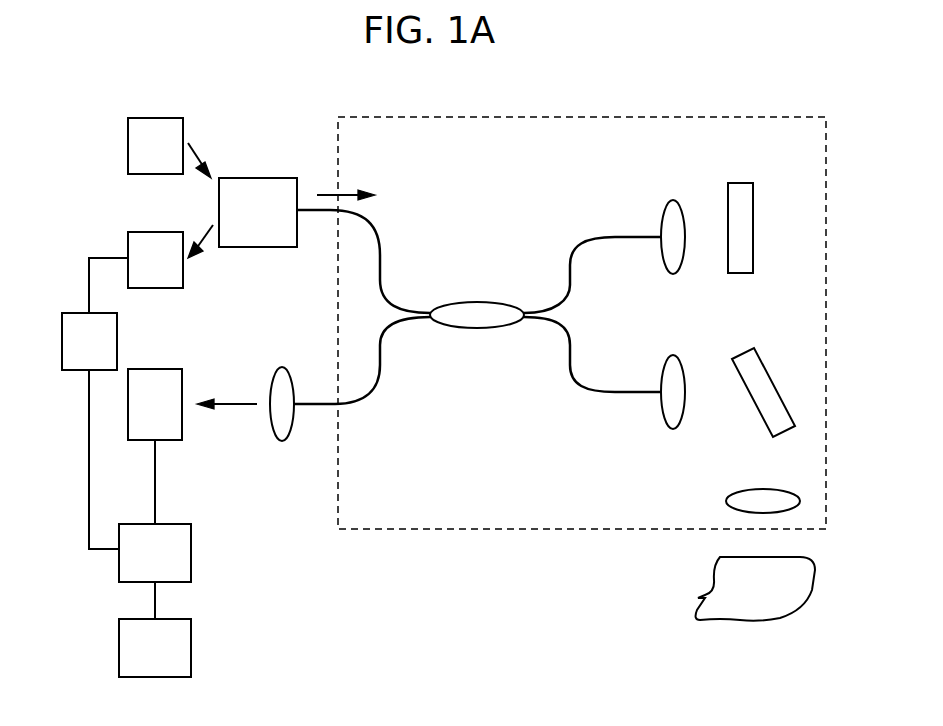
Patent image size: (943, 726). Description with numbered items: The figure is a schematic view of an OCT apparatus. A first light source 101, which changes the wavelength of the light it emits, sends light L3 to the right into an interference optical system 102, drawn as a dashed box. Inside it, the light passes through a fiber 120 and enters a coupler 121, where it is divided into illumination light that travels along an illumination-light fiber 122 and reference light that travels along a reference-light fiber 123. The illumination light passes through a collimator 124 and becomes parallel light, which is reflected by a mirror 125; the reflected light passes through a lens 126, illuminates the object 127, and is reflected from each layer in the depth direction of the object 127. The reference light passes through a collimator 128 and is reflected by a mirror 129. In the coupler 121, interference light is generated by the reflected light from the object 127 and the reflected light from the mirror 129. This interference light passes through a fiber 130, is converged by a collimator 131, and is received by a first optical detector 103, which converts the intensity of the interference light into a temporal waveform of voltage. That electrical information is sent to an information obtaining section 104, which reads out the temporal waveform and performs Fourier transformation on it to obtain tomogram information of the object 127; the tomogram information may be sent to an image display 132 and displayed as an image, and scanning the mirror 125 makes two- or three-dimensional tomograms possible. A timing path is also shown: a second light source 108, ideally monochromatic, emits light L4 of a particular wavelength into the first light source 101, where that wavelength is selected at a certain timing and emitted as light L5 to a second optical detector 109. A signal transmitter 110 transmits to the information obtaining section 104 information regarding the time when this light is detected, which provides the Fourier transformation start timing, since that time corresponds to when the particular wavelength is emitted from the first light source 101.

The first light source 101 is at (268, 178).
The interference optical system 102 is at (568, 117).
The first optical detector 103 is at (162, 369).
The information obtaining section 104 is at (191, 553).
The second light source 108 is at (128, 141).
The second optical detector 109 is at (128, 235).
The signal transmitter 110 is at (72, 313).
The fiber 120 is at (383, 250).
The coupler 121 is at (482, 302).
The illumination-light fiber 122 is at (573, 347).
The reference-light fiber 123 is at (598, 242).
The collimator 124 is at (673, 355).
The mirror 125 is at (752, 347).
The lens 126 is at (746, 490).
The object 127 is at (712, 572).
The collimator 128 is at (673, 200).
The mirror 129 is at (740, 183).
The fiber 130 is at (380, 372).
The collimator 131 is at (282, 441).
The image display 132 is at (191, 642).
The light emitted from the first light source L3 is at (345, 192).
The light emitted from the second light source L4 is at (200, 150).
The light emitted from the wavelength selection element L5 is at (206, 248).